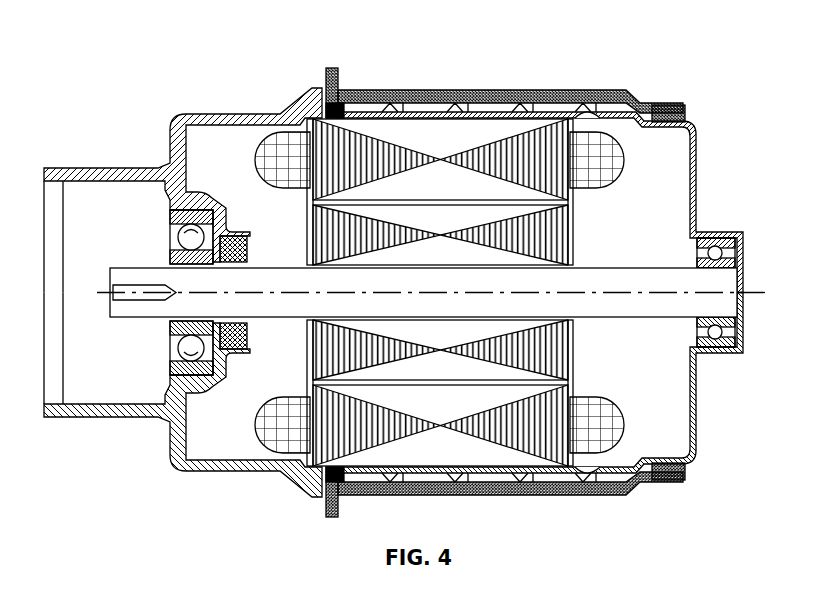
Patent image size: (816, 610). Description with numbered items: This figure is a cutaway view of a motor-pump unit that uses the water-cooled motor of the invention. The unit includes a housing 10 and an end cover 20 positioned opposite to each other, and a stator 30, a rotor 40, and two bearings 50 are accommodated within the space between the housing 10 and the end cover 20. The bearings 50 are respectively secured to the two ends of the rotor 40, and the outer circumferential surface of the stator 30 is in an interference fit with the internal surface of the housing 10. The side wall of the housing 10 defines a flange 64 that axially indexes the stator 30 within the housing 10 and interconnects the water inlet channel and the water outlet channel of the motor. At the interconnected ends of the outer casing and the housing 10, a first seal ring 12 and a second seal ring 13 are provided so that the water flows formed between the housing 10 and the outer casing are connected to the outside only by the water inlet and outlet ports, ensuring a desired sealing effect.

The housing 10 is at (428, 110).
The first seal ring 12 is at (340, 83).
The second seal ring 13 is at (657, 110).
The end cover 20 is at (215, 117).
The stator 30 is at (493, 130).
The rotor 40 is at (593, 283).
The bearings 50 is at (172, 222).
The flange 64 is at (595, 118).